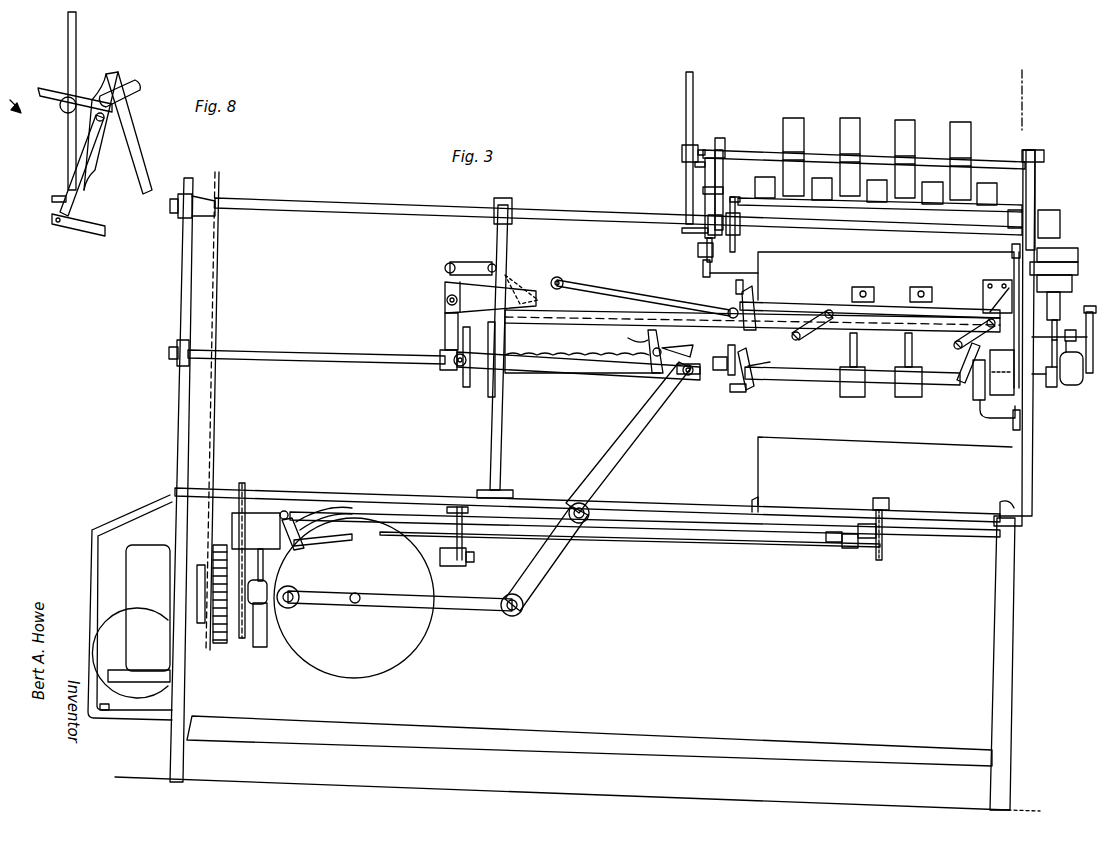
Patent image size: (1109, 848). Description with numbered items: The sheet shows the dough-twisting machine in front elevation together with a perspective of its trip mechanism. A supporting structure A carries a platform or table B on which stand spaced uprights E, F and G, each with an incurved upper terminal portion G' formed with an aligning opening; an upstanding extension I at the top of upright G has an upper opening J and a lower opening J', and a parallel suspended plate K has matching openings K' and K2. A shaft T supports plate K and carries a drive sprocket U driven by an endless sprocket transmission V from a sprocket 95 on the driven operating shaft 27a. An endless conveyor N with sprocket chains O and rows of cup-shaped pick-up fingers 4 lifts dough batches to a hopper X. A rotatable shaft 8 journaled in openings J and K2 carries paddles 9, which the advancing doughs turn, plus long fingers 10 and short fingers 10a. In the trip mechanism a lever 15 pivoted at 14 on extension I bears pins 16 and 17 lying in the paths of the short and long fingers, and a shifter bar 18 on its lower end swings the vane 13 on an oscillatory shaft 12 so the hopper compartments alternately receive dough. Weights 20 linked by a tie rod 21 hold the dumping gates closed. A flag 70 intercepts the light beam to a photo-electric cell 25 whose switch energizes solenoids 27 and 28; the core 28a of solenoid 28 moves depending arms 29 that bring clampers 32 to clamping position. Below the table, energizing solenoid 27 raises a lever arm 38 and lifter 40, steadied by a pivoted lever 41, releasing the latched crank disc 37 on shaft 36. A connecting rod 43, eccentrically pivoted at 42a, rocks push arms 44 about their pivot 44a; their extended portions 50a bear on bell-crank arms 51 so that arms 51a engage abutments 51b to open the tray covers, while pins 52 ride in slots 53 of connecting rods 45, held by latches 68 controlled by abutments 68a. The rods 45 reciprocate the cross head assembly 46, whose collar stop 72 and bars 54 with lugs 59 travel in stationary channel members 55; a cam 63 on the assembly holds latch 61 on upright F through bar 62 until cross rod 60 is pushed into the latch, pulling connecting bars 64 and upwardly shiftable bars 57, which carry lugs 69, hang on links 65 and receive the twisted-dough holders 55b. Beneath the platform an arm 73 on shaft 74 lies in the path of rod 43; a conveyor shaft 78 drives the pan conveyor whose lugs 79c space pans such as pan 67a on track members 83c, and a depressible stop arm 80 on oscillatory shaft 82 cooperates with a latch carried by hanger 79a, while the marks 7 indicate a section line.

In FIG. 8, the long fingers 10 is at (76, 40).
In FIG. 3, the long fingers 10 is at (688, 92).
In FIG. 8, the short fingers 10a is at (48, 90).
In FIG. 3, the short fingers 10a is at (686, 142).
In FIG. 8, the pin 16 is at (66, 120).
In FIG. 3, the pin 16 is at (700, 166).
In FIG. 8, the upstanding lever 15 is at (110, 118).
In FIG. 8, the upstanding extension I is at (144, 160).
In FIG. 3, the upstanding extension I is at (1040, 186).
In FIG. 8, the pivot 14 is at (86, 156).
In FIG. 3, the pivot 14 is at (704, 190).
In FIG. 8, the pin 17 is at (58, 196).
In FIG. 3, the pin 17 is at (682, 231).
In FIG. 8, the shifter bar 18 is at (80, 230).
In FIG. 3, the shifter bar 18 is at (698, 250).
In FIG. 3, the upright E is at (184, 240).
In FIG. 3, the endless sprocket transmission V is at (212, 328).
In FIG. 3, the drive sprocket U is at (214, 202).
In FIG. 3, the shaft T is at (372, 204).
In FIG. 3, the supporting structure A is at (1006, 630).
In FIG. 3, the upright G is at (1039, 333).
In FIG. 3, the housing / section line 7 is at (334, 606).
In FIG. 3, the driven shaft 27a is at (184, 596).
In FIG. 3, the platform or table B is at (428, 496).
In FIG. 3, the conveyor shaft 78 is at (628, 534).
In FIG. 3, the oscillatory shaft 82 is at (786, 539).
In FIG. 3, the sprocket 95 is at (206, 630).
In FIG. 3, the paddles 9 is at (848, 126).
In FIG. 3, the solenoid 27 is at (268, 512).
In FIG. 3, the lever arm 38 is at (300, 550).
In FIG. 3, the pivoted lever 41 is at (290, 530).
In FIG. 3, the lifter element 40 is at (316, 532).
In FIG. 3, the eccentric pivotal connection 42a is at (298, 592).
In FIG. 3, the rotatable shaft 36 is at (360, 594).
In FIG. 3, the crank disc 37 is at (414, 646).
In FIG. 3, the connecting rod 43 is at (474, 606).
In FIG. 3, the pivot 44a is at (578, 500).
In FIG. 3, the push or lever arms 44 is at (652, 432).
In FIG. 3, the shaft 74 is at (446, 556).
In FIG. 3, the arm 73 is at (452, 566).
In FIG. 3, the upper opening J is at (764, 313).
In FIG. 3, the incurved upper terminal portion G' is at (612, 243).
In FIG. 3, the upright F is at (494, 440).
In FIG. 3, the bar or pin 62 is at (454, 262).
In FIG. 3, the cam 63 is at (444, 284).
In FIG. 3, the cross head assembly 46 is at (444, 333).
In FIG. 3, the stop 72 is at (478, 388).
In FIG. 3, the connecting rods 45 is at (570, 368).
In FIG. 3, the stationary channel members 55 is at (588, 318).
In FIG. 3, the spring controlled pivoted latch 61 is at (512, 280).
In FIG. 3, the bars 54 is at (552, 288).
In FIG. 3, the cross rod 60 is at (565, 282).
In FIG. 3, the connecting bars 64 is at (628, 296).
In FIG. 3, the bosses or lugs 59 is at (736, 286).
In FIG. 3, the lugs 69 is at (756, 302).
In FIG. 3, the links 65 is at (814, 312).
In FIG. 3, the upwardly shiftable bars 57 is at (882, 306).
In FIG. 3, the twisted dough holders 55b is at (858, 360).
In FIG. 3, the latches 68 is at (627, 339).
In FIG. 3, the abutments 68a is at (676, 347).
In FIG. 3, the extended portions 50a is at (720, 355).
In FIG. 3, the arms 51 is at (748, 362).
In FIG. 3, the abutments 51b is at (770, 360).
In FIG. 3, the arms 51a is at (744, 392).
In FIG. 3, the pins 52 is at (690, 376).
In FIG. 3, the slots 53 is at (676, 372).
In FIG. 3, the hopper X is at (800, 256).
In FIG. 3, the pan 67a is at (806, 444).
In FIG. 3, the vane 13 is at (923, 327).
In FIG. 3, the oscillatory shaft 12 is at (1022, 70).
In FIG. 3, the rotatable shaft 8 is at (746, 152).
In FIG. 3, the dough pick-up fingers 4 is at (878, 186).
In FIG. 3, the lower opening J' is at (1053, 219).
In FIG. 3, the endless conveyor N is at (1008, 218).
In FIG. 3, the sprocket chains O is at (734, 240).
In FIG. 3, the upper opening K' is at (711, 189).
In FIG. 3, the suspended plate K is at (729, 190).
In FIG. 3, the lower opening K2 is at (738, 214).
In FIG. 3, the solenoid 28 is at (1070, 262).
In FIG. 3, the core 28a is at (1060, 310).
In FIG. 3, the tie rod 21 is at (1059, 326).
In FIG. 3, the depending arms 29 is at (1054, 346).
In FIG. 3, the weights 20 is at (1076, 385).
In FIG. 3, the clampers 32 is at (1026, 382).
In FIG. 3, the photo-electric cell 25 is at (994, 349).
In FIG. 3, the flag or interrupter 70 is at (962, 388).
In FIG. 3, the track members 83c is at (1038, 508).
In FIG. 3, the lugs 79c is at (886, 500).
In FIG. 3, the hanger 79a is at (882, 554).
In FIG. 3, the depressible stop arm 80 is at (836, 542).